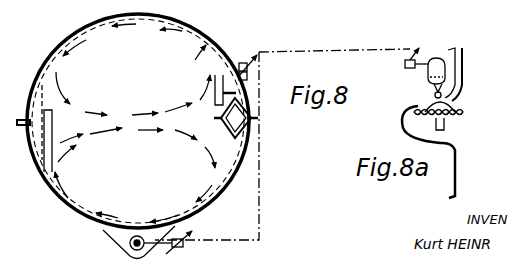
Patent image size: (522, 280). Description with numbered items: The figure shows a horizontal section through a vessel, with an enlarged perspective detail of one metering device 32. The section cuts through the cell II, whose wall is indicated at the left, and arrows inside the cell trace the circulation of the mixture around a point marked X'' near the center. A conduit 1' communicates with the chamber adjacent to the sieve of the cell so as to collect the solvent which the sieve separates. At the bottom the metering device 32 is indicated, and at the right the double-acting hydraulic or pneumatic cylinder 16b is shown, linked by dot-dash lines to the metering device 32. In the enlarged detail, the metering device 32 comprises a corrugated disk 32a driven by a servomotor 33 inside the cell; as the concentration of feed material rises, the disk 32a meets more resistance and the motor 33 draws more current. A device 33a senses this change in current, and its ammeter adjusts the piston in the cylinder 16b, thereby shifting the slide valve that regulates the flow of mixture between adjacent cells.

In FIG. 8, the double-acting hydraulic or pneumatic cylinder 16b is at (243, 62).
In FIG. 8, the conduit 1' is at (15, 136).
In FIG. 8, the cell II is at (48, 187).
In FIG. 8, the flow point X'' is at (121, 103).
In FIG. 8, the metering device 32 is at (115, 244).
In FIG. 8A, the corrugated disk 32a is at (403, 128).
In FIG. 8A, the servomotor 33 is at (437, 58).
In FIG. 8A, the sensing device 33a is at (405, 70).